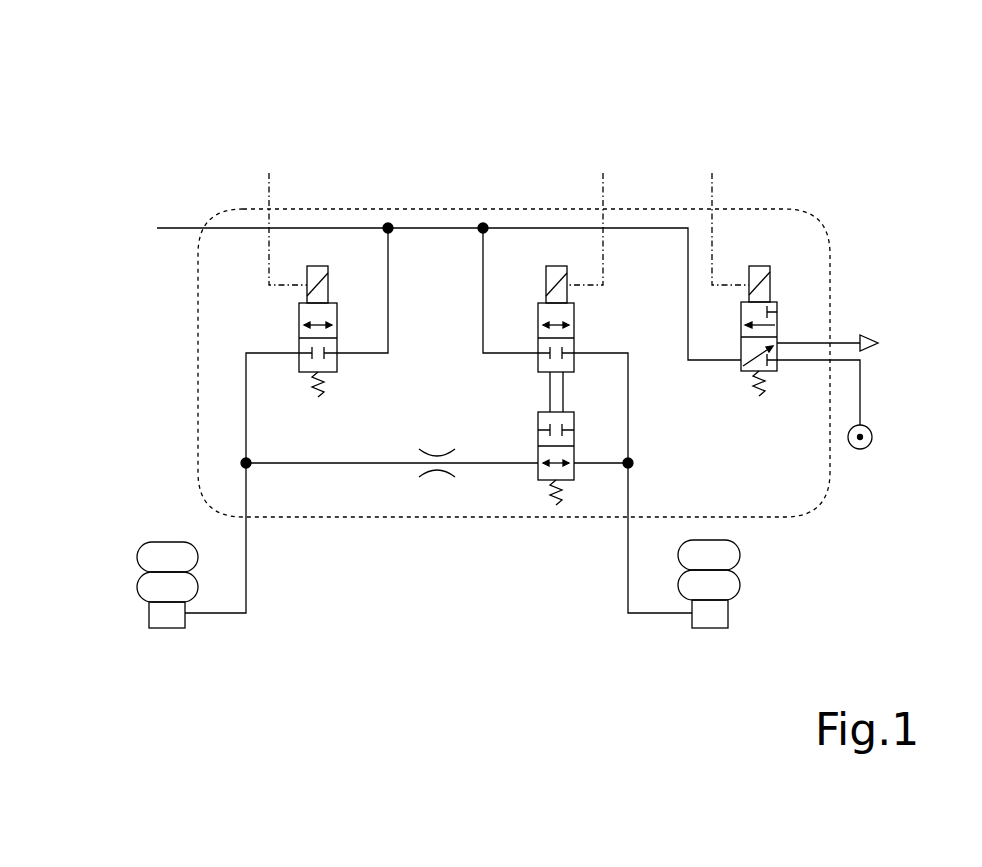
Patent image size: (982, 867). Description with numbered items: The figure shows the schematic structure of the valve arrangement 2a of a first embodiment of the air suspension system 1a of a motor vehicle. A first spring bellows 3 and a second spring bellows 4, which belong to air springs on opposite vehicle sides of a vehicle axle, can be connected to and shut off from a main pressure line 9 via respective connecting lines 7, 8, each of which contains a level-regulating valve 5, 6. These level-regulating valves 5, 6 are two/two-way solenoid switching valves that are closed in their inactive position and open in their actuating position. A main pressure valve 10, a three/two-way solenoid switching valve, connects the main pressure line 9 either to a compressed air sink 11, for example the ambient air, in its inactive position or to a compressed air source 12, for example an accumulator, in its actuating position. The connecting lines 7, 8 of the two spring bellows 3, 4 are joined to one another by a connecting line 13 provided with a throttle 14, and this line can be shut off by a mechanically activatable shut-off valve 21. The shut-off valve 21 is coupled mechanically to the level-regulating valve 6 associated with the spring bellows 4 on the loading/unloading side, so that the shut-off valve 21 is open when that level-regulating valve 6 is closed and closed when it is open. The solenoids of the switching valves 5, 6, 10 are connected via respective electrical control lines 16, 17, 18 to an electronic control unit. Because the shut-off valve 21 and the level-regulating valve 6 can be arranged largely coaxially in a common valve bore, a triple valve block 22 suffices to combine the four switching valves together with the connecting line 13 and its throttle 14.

The air suspension system 1a is at (133, 150).
The valve arrangement 2a is at (498, 377).
The first spring bellows 3 is at (167, 558).
The second spring bellows 4 is at (710, 557).
The level-regulating valve 5 is at (284, 330).
The level-regulating valve 6 is at (561, 251).
The connecting line 7 is at (387, 293).
The connecting line 8 is at (487, 293).
The main pressure line 9 is at (178, 228).
The main pressure valve 10 is at (786, 330).
The compressed air sink 11 is at (880, 343).
The compressed air source 12 is at (873, 437).
The connecting line 13 is at (346, 463).
The throttle 14 is at (437, 484).
The electrical control line 16 is at (270, 190).
The electrical control line 17 is at (604, 190).
The electrical control line 18 is at (713, 190).
The shut-off valve 21 is at (556, 526).
The triple valve block 22 is at (197, 400).